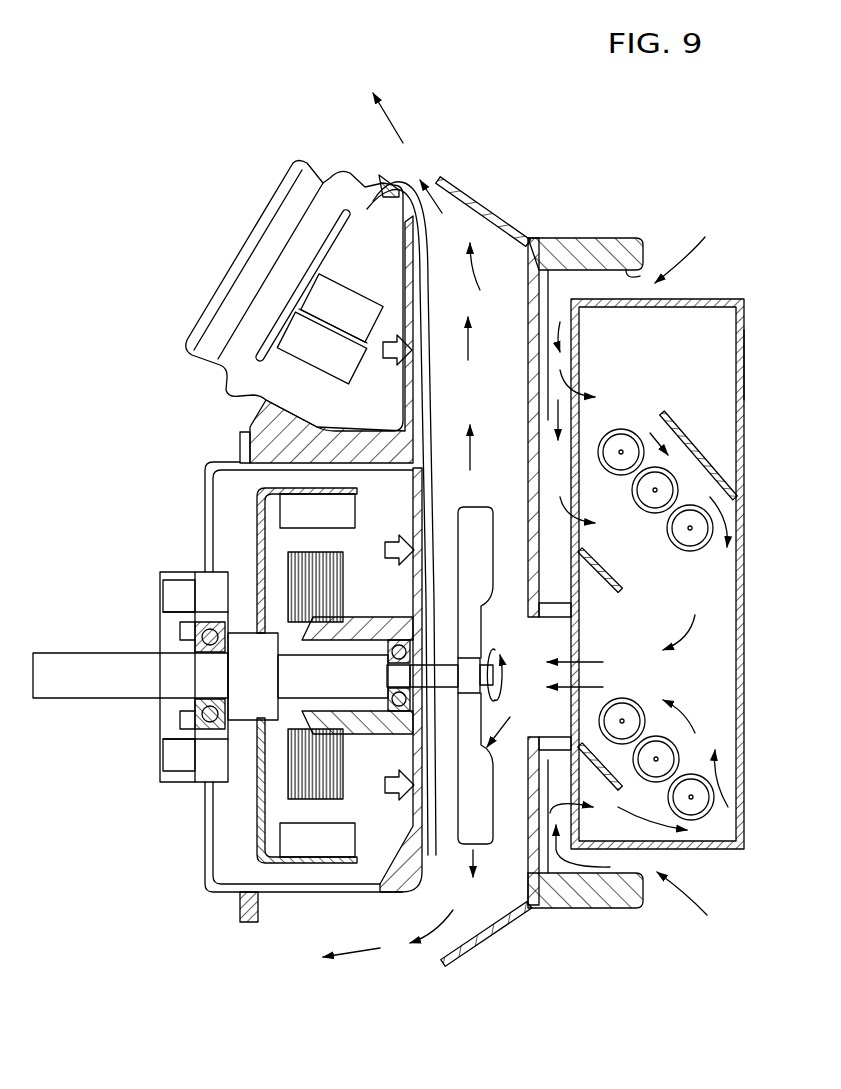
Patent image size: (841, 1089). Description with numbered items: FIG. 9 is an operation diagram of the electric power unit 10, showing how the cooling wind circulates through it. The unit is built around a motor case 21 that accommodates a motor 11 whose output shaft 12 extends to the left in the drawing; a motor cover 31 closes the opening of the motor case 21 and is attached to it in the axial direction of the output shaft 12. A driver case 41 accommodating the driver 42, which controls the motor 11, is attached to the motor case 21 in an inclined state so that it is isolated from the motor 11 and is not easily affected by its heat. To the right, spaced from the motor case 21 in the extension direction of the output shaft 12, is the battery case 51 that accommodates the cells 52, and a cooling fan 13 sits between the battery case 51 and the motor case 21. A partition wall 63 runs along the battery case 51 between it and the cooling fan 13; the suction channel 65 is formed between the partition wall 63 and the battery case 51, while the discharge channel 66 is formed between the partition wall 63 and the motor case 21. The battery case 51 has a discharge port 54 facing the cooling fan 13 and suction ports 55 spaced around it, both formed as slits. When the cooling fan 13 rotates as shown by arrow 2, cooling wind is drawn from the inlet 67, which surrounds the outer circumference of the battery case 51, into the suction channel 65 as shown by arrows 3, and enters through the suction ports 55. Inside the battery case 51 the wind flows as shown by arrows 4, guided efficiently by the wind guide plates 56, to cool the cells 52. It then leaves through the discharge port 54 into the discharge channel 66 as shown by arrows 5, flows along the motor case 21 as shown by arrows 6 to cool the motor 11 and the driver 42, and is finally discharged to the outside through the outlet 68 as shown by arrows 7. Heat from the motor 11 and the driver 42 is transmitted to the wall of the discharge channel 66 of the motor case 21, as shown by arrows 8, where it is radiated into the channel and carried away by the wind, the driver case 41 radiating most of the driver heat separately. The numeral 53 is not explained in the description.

The electric power unit 10 is at (176, 112).
The motor 11 is at (255, 545).
The output shaft 12 is at (90, 700).
The cooling fan 13 is at (490, 840).
The motor case 21 is at (325, 905).
The motor cover 31 is at (215, 845).
The driver case 41 is at (250, 232).
The driver 42 is at (300, 365).
The battery case 51 is at (745, 445).
The cells 52 is at (702, 555).
The box wall 53 is at (746, 362).
The discharge port 54 is at (572, 622).
The suction ports 55 is at (580, 395).
The wind guide plates 56 is at (685, 440).
The partition wall 63 is at (530, 330).
The suction channel 65 is at (553, 290).
The discharge channel 66 is at (483, 240).
The inlet 67 is at (638, 275).
The outlet 68 is at (440, 178).
The arrow (rotation of cooling fan) 2 is at (495, 660).
The arrows (wind from inlet to suction channel) 3 is at (695, 245).
The arrows (wind inside battery case) 4 is at (735, 525).
The arrows (wind from discharge port) 5 is at (600, 687).
The arrows (wind through discharge channel) 6 is at (475, 345).
The arrows (wind discharged from outlet) 7 is at (410, 195).
The arrows (heat transfer) 8 is at (395, 345).